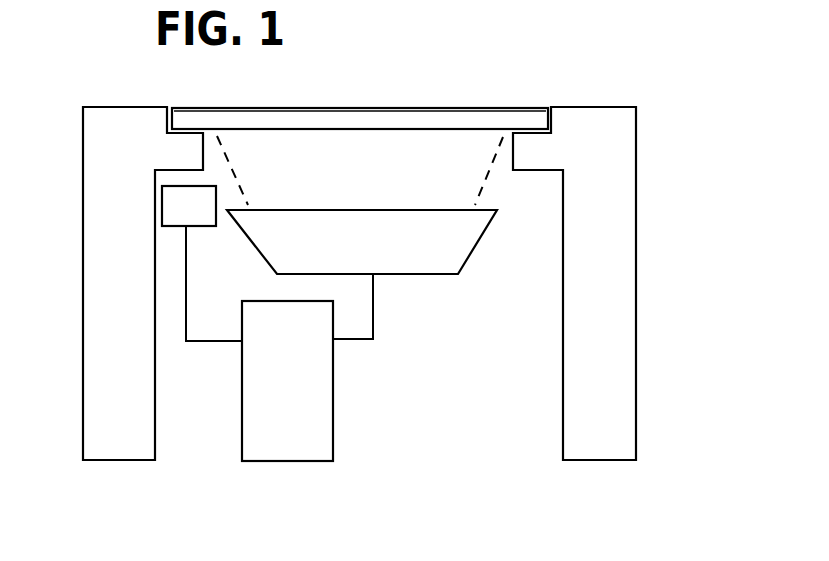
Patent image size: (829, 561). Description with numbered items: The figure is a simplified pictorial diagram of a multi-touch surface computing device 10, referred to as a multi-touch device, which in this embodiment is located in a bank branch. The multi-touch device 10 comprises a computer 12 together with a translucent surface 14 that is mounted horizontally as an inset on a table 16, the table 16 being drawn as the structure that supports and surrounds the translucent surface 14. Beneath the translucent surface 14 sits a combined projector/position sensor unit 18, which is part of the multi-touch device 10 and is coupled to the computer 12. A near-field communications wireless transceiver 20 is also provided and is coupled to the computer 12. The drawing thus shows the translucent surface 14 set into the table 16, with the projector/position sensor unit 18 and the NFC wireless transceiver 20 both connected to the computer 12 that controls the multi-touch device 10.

The multi-touch surface computing device 10 is at (657, 43).
The computer 12 is at (287, 461).
The translucent surface 14 is at (417, 108).
The table 16 is at (83, 403).
The combined projector/position sensor unit 18 is at (437, 274).
The near-field communications (NFC) wireless transceiver 20 is at (162, 207).